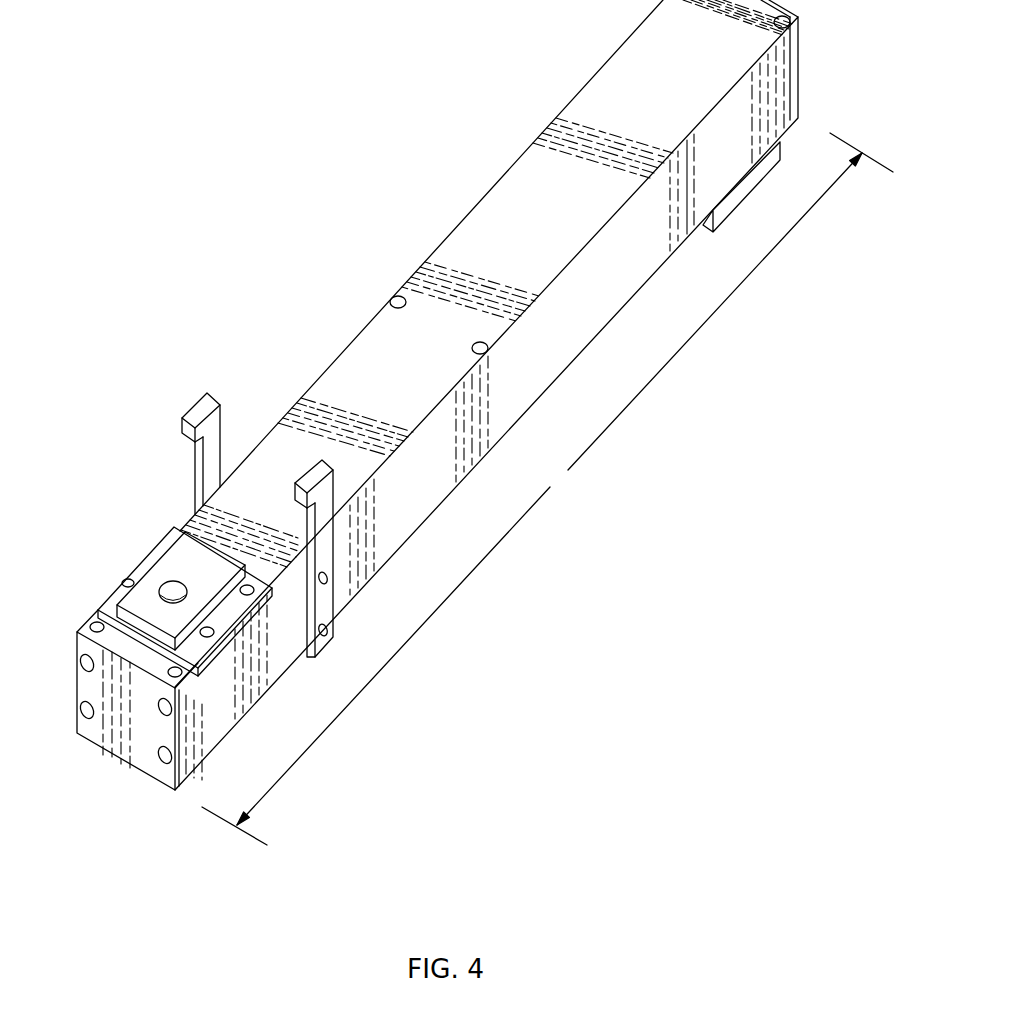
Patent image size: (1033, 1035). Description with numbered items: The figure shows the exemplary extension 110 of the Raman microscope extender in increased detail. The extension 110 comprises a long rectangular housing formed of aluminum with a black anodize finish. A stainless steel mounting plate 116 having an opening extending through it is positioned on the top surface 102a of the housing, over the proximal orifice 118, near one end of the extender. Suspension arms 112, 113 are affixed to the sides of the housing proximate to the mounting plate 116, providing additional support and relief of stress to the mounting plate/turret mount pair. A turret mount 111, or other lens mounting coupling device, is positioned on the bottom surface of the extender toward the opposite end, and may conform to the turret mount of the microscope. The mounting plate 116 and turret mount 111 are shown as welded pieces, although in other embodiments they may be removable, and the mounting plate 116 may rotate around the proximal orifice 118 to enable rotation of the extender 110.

The top surface 102a is at (685, 100).
The extension 110 is at (367, 275).
The turret mount 111 is at (735, 196).
The suspension arm 112 is at (308, 478).
The suspension arm 113 is at (207, 398).
The mounting plate 116 is at (137, 556).
The proximal orifice 118 is at (175, 582).